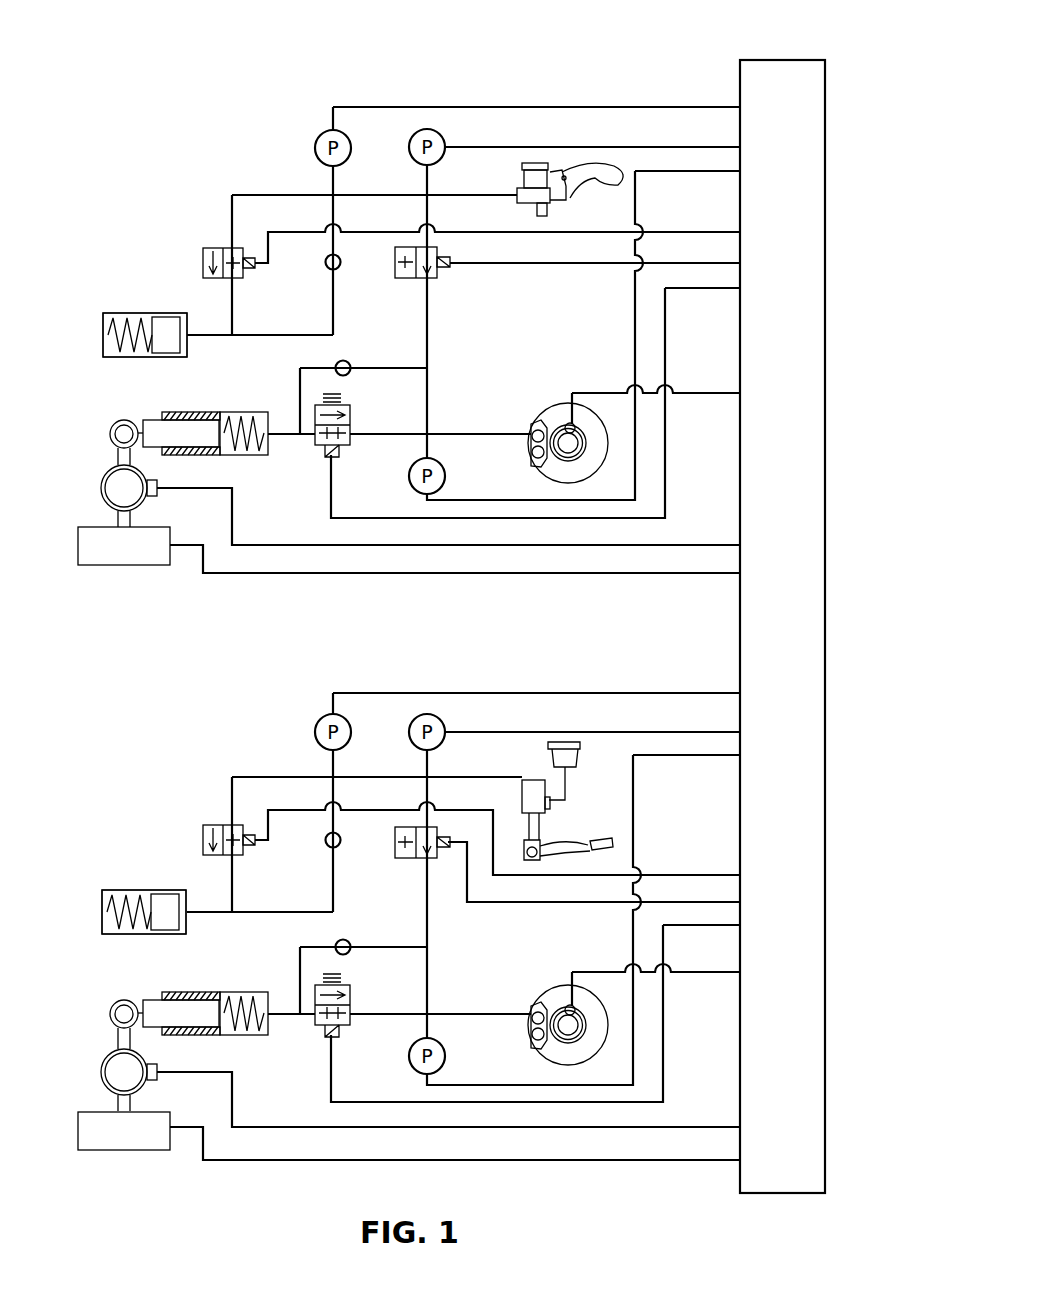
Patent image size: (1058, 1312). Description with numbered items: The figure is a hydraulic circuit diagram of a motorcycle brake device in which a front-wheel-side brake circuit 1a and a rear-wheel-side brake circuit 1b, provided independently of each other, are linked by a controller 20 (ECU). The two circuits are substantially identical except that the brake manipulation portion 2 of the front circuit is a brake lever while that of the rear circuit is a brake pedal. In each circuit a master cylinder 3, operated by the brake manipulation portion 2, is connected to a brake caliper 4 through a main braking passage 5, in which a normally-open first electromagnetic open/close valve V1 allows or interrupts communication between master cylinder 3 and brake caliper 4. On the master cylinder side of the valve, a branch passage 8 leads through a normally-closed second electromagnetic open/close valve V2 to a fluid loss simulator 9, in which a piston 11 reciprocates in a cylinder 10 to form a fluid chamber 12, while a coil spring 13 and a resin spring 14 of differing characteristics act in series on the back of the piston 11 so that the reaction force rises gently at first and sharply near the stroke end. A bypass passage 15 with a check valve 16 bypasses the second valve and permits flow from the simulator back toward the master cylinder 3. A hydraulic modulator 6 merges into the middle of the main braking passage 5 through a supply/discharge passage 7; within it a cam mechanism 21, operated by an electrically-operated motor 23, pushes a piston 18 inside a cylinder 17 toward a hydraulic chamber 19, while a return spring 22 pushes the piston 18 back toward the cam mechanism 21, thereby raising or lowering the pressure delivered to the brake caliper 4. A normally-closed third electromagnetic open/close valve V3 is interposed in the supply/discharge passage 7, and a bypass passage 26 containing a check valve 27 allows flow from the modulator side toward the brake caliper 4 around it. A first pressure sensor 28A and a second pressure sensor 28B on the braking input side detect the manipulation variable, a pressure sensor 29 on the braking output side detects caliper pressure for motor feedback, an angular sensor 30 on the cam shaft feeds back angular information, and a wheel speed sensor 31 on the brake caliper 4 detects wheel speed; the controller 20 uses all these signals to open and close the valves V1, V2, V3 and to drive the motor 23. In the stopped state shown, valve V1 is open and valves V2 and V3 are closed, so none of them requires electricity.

The front-wheel-side brake circuit 1a is at (527, 96).
The rear-wheel-side brake circuit 1b is at (527, 684).
The brake manipulation portion 2 is at (590, 186).
The master cylinder 3 is at (517, 192).
The brake caliper 4 is at (530, 427).
The main braking passage 5 is at (428, 345).
The hydraulic modulator 6 is at (227, 723).
The supply/discharge passage 7 is at (390, 433).
The branch passage 8 is at (290, 195).
The fluid loss simulator 9 is at (131, 593).
The cylinder 10 is at (165, 314).
The piston 11 is at (168, 330).
The fluid chamber 12 is at (188, 349).
The coil spring 13 is at (102, 614).
The resin spring 14 is at (103, 330).
The bypass passage 15 is at (270, 334).
The check valve 16 is at (325, 262).
The cylinder 17 is at (195, 456).
The piston 18 is at (165, 428).
The hydraulic chamber 19 is at (242, 414).
The controller (ECU) 20 is at (800, 72).
The cam mechanism 21 is at (124, 420).
The return spring 22 is at (246, 440).
The electrically-operated motor 23 is at (97, 560).
The bypass passage 26 is at (396, 367).
The check valve 27 is at (335, 367).
The first pressure sensor 28A is at (416, 162).
The second pressure sensor 28B is at (323, 134).
The pressure sensor 29 is at (446, 476).
The angular sensor 30 is at (158, 497).
The wheel speed sensor 31 is at (569, 423).
The first electromagnetic open/close valve V1 is at (410, 278).
The second electromagnetic open/close valve V2 is at (210, 247).
The third electromagnetic open/close valve V3 is at (344, 446).